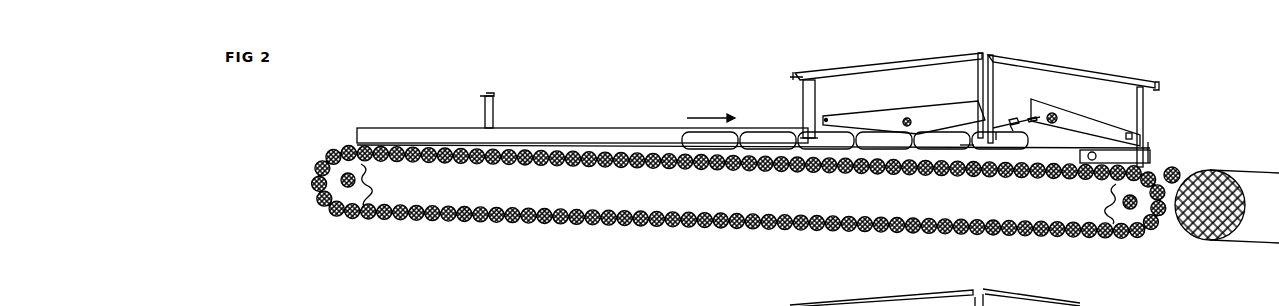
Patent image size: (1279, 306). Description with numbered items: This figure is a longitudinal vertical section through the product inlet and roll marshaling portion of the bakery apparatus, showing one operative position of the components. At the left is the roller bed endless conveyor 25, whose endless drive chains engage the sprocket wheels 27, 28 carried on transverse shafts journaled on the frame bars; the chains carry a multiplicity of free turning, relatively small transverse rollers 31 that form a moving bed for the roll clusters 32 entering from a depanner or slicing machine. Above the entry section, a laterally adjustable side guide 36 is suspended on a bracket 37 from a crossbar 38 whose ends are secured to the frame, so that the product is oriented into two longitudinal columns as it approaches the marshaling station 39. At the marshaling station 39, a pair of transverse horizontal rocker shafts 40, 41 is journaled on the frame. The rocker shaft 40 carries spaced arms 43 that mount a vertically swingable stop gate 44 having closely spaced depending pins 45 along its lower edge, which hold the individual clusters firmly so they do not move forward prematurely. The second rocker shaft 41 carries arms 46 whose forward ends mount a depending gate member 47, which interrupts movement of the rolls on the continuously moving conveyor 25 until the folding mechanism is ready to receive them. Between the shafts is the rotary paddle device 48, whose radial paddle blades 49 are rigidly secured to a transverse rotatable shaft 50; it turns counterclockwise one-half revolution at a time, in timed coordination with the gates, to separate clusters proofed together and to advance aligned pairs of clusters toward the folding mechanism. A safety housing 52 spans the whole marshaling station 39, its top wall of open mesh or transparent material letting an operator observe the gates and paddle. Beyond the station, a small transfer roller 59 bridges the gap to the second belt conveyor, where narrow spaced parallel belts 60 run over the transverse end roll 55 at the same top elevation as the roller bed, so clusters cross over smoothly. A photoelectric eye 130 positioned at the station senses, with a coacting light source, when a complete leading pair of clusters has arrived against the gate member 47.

The roller bed endless conveyor 25 is at (606, 158).
The sprocket wheel 27 is at (355, 200).
The sprocket wheel 28 is at (1120, 214).
The transverse rollers 31 is at (533, 152).
The roll clusters 32 is at (765, 130).
The side guide 36 is at (430, 136).
The bracket 37 is at (493, 117).
The crossbar 38 is at (480, 97).
The marshaling station 39 is at (1018, 88).
The rocker shaft 40 is at (907, 118).
The rocker shaft 41 is at (1054, 114).
The arms 43 is at (944, 112).
The stop gate 44 is at (990, 130).
The depending pins 45 is at (966, 146).
The arms 46 is at (1098, 128).
The gate member 47 is at (1133, 162).
The rotary paddle device 48 is at (1035, 114).
The paddle blades 49 is at (997, 140).
The shaft 50 is at (1013, 131).
The housing 52 is at (877, 70).
The end roll 55 is at (1208, 228).
The transfer roller 59 is at (1178, 171).
The belts 60 is at (1265, 168).
The photoelectric eye 130 is at (1084, 163).